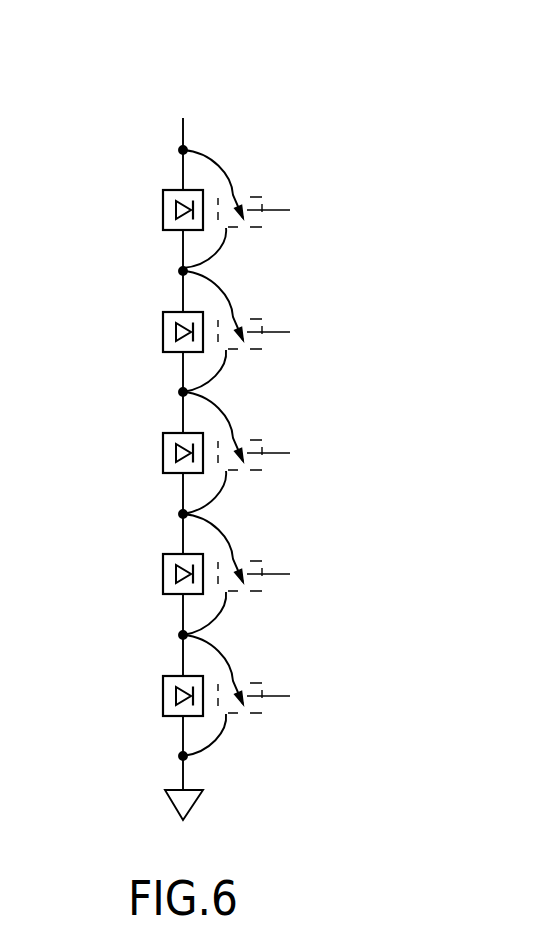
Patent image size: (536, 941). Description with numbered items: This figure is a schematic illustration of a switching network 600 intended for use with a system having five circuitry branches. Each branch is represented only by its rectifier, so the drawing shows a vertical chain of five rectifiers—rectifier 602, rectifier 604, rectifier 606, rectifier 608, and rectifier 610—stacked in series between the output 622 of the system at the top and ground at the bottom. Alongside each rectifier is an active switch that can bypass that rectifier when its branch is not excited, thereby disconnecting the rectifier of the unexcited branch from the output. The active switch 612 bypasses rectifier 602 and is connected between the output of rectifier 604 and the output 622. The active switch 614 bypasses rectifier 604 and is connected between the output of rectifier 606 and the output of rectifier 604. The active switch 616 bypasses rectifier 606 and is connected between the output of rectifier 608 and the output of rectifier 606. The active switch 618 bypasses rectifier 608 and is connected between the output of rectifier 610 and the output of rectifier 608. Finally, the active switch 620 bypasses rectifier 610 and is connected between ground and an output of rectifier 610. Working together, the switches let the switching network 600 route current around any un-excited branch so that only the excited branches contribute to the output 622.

The switching network 600 is at (312, 122).
The rectifier 602 is at (163, 207).
The rectifier 604 is at (163, 329).
The rectifier 606 is at (163, 450).
The rectifier 608 is at (163, 571).
The rectifier 610 is at (163, 693).
The active switch 612 is at (330, 210).
The active switch 614 is at (330, 332).
The active switch 616 is at (330, 453).
The active switch 618 is at (330, 574).
The active switch 620 is at (330, 696).
The output 622 is at (190, 85).